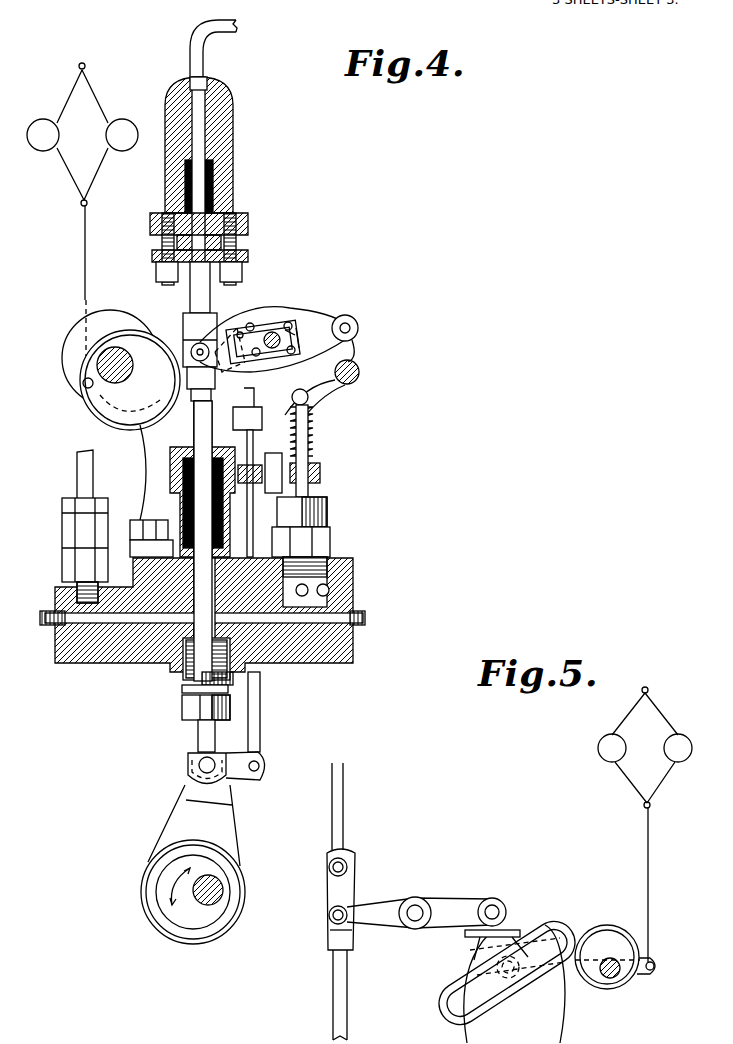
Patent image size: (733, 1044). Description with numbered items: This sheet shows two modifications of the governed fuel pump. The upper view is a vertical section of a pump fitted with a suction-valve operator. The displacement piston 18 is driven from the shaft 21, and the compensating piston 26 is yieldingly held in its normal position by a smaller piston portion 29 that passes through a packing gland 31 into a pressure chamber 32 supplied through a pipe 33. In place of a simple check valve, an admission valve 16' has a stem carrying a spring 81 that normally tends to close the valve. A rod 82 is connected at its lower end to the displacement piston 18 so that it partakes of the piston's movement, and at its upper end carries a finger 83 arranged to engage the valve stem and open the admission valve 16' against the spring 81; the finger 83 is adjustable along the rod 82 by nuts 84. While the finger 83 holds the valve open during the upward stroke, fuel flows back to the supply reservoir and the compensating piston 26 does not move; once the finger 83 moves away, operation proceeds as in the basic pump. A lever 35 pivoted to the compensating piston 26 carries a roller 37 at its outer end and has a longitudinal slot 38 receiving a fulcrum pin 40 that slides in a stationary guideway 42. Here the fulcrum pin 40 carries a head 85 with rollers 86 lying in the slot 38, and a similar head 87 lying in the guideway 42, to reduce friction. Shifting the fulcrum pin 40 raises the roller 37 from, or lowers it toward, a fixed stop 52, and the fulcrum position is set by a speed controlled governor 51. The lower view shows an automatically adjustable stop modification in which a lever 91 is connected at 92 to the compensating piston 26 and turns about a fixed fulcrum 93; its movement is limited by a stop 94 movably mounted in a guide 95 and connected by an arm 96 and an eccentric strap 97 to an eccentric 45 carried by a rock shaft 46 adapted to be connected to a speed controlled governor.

In FIG. 4, the admission valve 16' is at (337, 527).
In FIG. 4, the displacement piston 18 is at (200, 736).
In FIG. 4, the shaft 21 is at (222, 892).
In FIG. 4, the compensating piston 26 is at (192, 437).
In FIG. 5, the compensating piston 26 is at (334, 1008).
In FIG. 4, the smaller piston portion 29 is at (195, 297).
In FIG. 5, the smaller piston portion 29 is at (343, 812).
In FIG. 4, the packing gland 31 is at (235, 180).
In FIG. 4, the pressure chamber 32 is at (230, 107).
In FIG. 4, the pipe 33 is at (207, 57).
In FIG. 4, the lever 35 is at (272, 332).
In FIG. 4, the roller 37 is at (358, 325).
In FIG. 4, the longitudinal slot 38 is at (278, 334).
In FIG. 4, the fulcrum pin 40 is at (290, 333).
In FIG. 4, the stationary guideway 42 is at (238, 325).
In FIG. 5, the eccentric 45 is at (605, 942).
In FIG. 5, the rock shaft 46 is at (612, 978).
In FIG. 4, the speed controlled governor 51 is at (82, 226).
In FIG. 4, the fixed stop 52 is at (359, 368).
In FIG. 4, the spring 81 is at (313, 450).
In FIG. 4, the rod 82 is at (305, 486).
In FIG. 4, the finger 83 is at (309, 398).
In FIG. 4, the nuts 84 is at (262, 414).
In FIG. 4, the head 85 is at (298, 335).
In FIG. 4, the rollers 86 is at (252, 330).
In FIG. 4, the head 87 is at (242, 330).
In FIG. 5, the lever 91 is at (390, 902).
In FIG. 5, the connection 92 is at (330, 917).
In FIG. 5, the fixed fulcrum 93 is at (415, 921).
In FIG. 5, the stop 94 is at (480, 940).
In FIG. 5, the guide 95 is at (470, 1000).
In FIG. 5, the arm 96 is at (572, 970).
In FIG. 5, the eccentric strap 97 is at (619, 925).